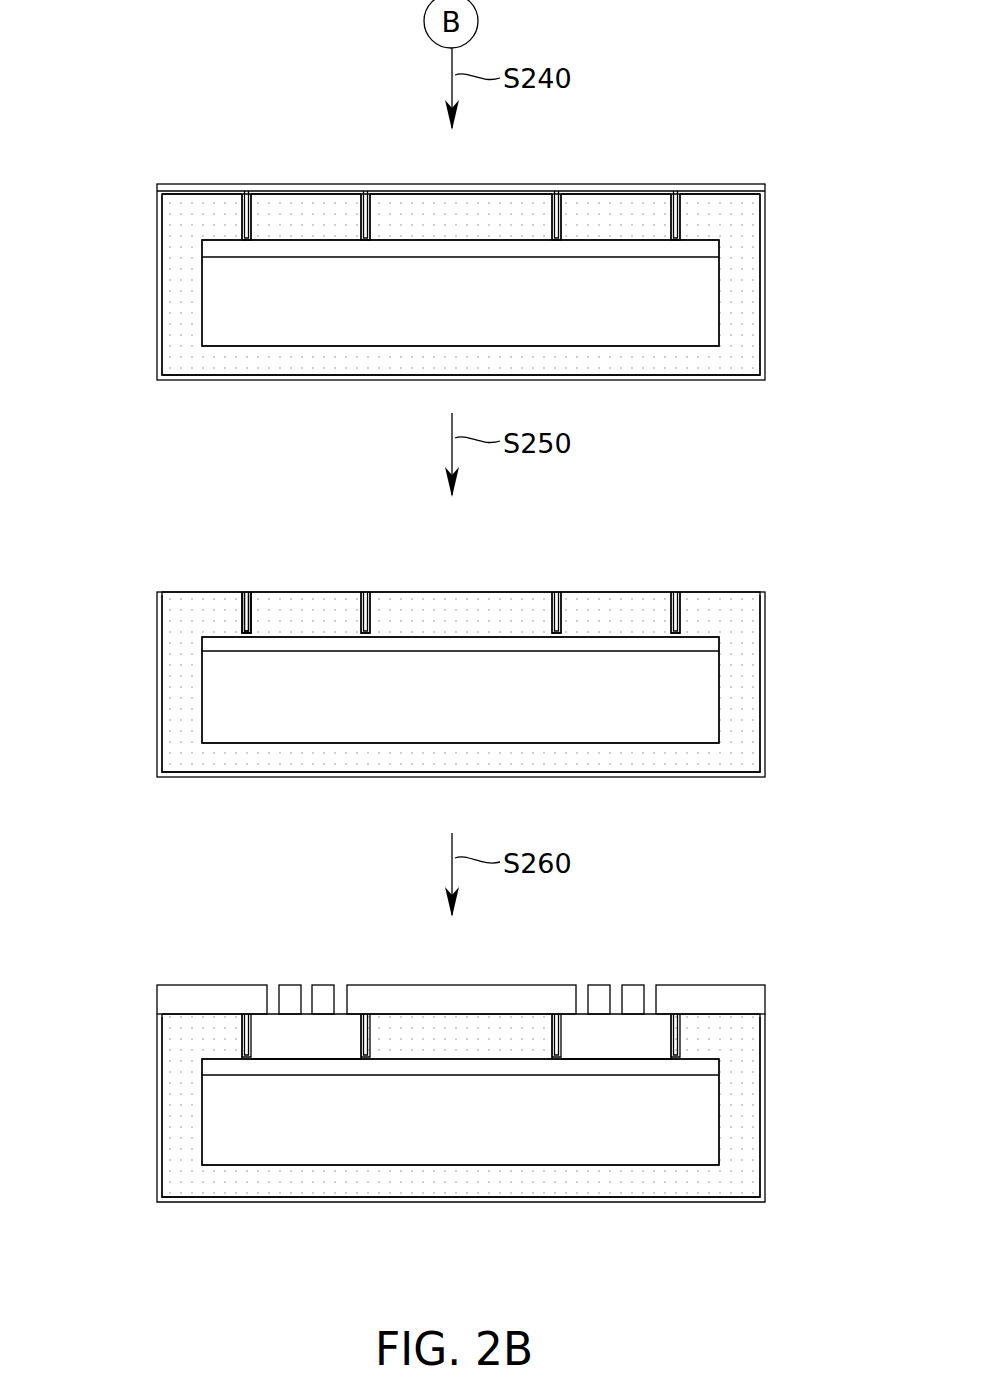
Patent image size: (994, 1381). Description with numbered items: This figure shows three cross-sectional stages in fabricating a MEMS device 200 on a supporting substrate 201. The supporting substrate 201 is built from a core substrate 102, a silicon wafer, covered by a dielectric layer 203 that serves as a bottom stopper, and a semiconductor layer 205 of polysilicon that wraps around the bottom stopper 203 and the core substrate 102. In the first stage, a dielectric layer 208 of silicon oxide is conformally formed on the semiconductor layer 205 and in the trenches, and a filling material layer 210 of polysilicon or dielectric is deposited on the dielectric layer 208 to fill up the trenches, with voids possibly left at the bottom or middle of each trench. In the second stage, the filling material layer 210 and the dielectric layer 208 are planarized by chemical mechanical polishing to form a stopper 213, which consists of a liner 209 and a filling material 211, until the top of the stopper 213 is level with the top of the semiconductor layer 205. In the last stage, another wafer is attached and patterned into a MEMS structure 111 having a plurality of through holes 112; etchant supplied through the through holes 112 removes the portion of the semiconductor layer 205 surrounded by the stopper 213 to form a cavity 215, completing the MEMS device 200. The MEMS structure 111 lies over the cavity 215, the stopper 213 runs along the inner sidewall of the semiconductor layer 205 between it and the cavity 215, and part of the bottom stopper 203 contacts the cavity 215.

The MEMS device 200 is at (533, 1068).
The supporting substrate 201 is at (793, 321).
The dielectric layer 203 is at (710, 247).
The semiconductor layer 205 is at (175, 295).
The dielectric layer 208 is at (157, 218).
The liner 209 is at (240, 623).
The filling material layer 210 is at (302, 188).
The filling material 211 is at (246, 597).
The stopper 213 is at (296, 522).
The cavity 215 is at (302, 1052).
The core substrate 102 is at (684, 325).
The MEMS structure 111 is at (793, 1014).
The through holes 112 is at (345, 955).